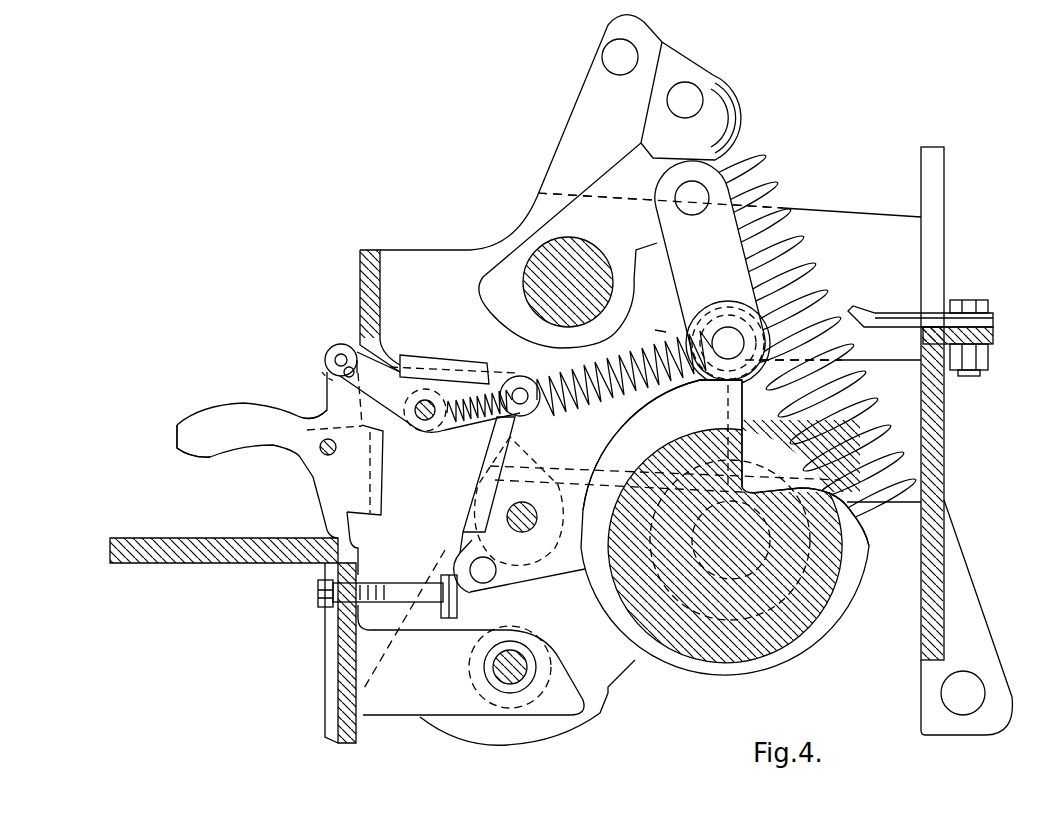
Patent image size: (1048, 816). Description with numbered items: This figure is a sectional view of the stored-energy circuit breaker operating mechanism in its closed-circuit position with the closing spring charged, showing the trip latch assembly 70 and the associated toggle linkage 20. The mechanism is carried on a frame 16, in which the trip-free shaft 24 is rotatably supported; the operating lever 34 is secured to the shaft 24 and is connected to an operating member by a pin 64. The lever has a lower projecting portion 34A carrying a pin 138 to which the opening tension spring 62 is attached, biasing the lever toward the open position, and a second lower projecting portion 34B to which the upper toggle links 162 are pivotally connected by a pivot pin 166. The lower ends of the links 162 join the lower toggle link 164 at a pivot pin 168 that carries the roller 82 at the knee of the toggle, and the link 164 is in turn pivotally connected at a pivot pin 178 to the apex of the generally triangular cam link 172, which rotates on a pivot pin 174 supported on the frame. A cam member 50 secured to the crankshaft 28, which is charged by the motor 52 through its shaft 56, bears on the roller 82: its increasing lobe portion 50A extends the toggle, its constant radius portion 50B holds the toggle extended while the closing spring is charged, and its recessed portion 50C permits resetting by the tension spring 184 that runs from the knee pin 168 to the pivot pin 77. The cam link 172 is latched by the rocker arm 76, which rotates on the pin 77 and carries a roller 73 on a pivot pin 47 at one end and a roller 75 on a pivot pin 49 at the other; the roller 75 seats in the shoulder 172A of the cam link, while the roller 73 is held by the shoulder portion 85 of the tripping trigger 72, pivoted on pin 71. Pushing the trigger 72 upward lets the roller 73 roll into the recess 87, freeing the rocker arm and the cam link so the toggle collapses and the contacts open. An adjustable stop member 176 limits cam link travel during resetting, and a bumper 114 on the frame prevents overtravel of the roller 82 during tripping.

The frame 16 is at (945, 426).
The toggle linkage 20 is at (661, 304).
The trip-free shaft 24 is at (580, 239).
The crankshaft 28 is at (767, 494).
The operating lever 34 is at (610, 181).
The lower projecting portion 34A is at (678, 62).
The lower projecting portion 34B is at (690, 273).
The pivot pin 47 is at (334, 361).
The pivot pin 49 is at (521, 376).
The cam member 50 is at (741, 547).
The first increasing lobe portion 50A is at (859, 534).
The second constant radius portion 50B is at (683, 401).
The third recessed portion 50C is at (757, 480).
The motor 52 is at (535, 741).
The shaft 56 is at (513, 646).
The tension spring 62 is at (757, 155).
The pin 64 is at (616, 70).
The trip latch assembly 70 is at (280, 452).
The pivot pin 71 is at (331, 455).
The tripping trigger 72 is at (228, 452).
The roller 73 is at (336, 345).
The roller 75 is at (503, 377).
The rocker arm 76 is at (440, 382).
The pivot pin 77 is at (416, 405).
The roller 82 is at (744, 396).
The shoulder portion 85 is at (320, 375).
The recess 87 is at (314, 413).
The stop member 114 is at (855, 311).
The pin 138 is at (697, 114).
The upper toggle links 162 is at (658, 225).
The lower toggle link 164 is at (667, 334).
The pivot pin 166 is at (709, 212).
The pivot pin 168 is at (742, 334).
The cam link 172 is at (633, 496).
The shoulder 172A is at (518, 421).
The pivot pin 174 is at (530, 502).
The adjustable stop member 176 is at (459, 600).
The pivot pin 178 is at (473, 553).
The tension spring 184 is at (662, 338).